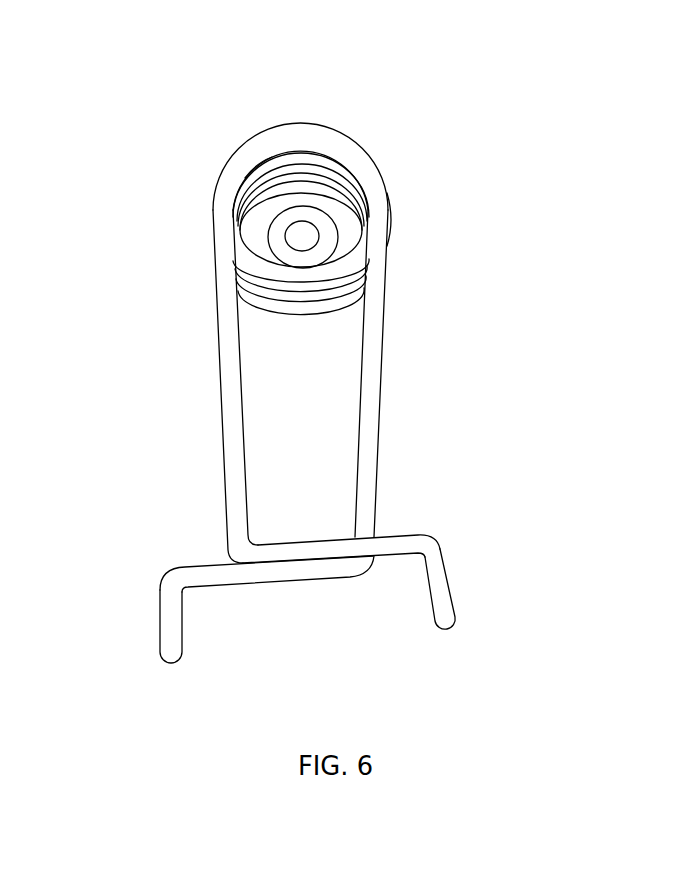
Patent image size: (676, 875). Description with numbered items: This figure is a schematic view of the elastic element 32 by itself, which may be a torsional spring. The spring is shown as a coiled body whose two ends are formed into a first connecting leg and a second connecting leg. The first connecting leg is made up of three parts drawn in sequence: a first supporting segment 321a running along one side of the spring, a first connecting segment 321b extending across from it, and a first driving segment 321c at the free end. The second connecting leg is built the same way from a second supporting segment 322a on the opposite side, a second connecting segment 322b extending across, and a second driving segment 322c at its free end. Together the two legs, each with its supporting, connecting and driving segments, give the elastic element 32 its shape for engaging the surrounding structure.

The elastic element 32 is at (230, 121).
The first supporting segment 321a is at (382, 403).
The first connecting segment 321b is at (257, 575).
The first driving segment 321c is at (177, 618).
The second supporting segment 322a is at (222, 367).
The second connecting segment 322b is at (322, 549).
The second driving segment 322c is at (440, 590).